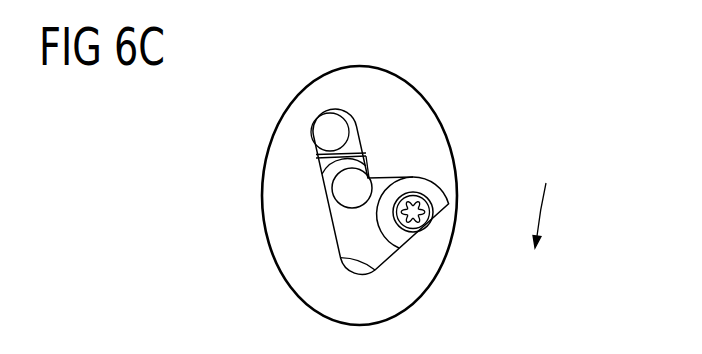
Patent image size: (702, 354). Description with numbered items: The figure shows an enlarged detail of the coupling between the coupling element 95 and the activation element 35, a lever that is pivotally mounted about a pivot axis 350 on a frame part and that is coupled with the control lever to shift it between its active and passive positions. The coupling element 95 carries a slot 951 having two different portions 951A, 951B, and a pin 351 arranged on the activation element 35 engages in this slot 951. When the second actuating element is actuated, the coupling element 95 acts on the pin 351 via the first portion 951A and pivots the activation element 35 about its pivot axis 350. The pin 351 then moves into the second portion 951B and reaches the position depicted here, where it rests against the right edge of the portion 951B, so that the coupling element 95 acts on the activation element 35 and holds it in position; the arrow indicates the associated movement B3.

The coupling element 95 is at (410, 280).
The activation element 35 is at (355, 141).
The pivot axis 350 is at (328, 132).
The slot 951 is at (386, 150).
The first portion 951A is at (418, 176).
The second portion 951B is at (366, 154).
The pin 351 is at (352, 190).
The movement B3 is at (554, 215).